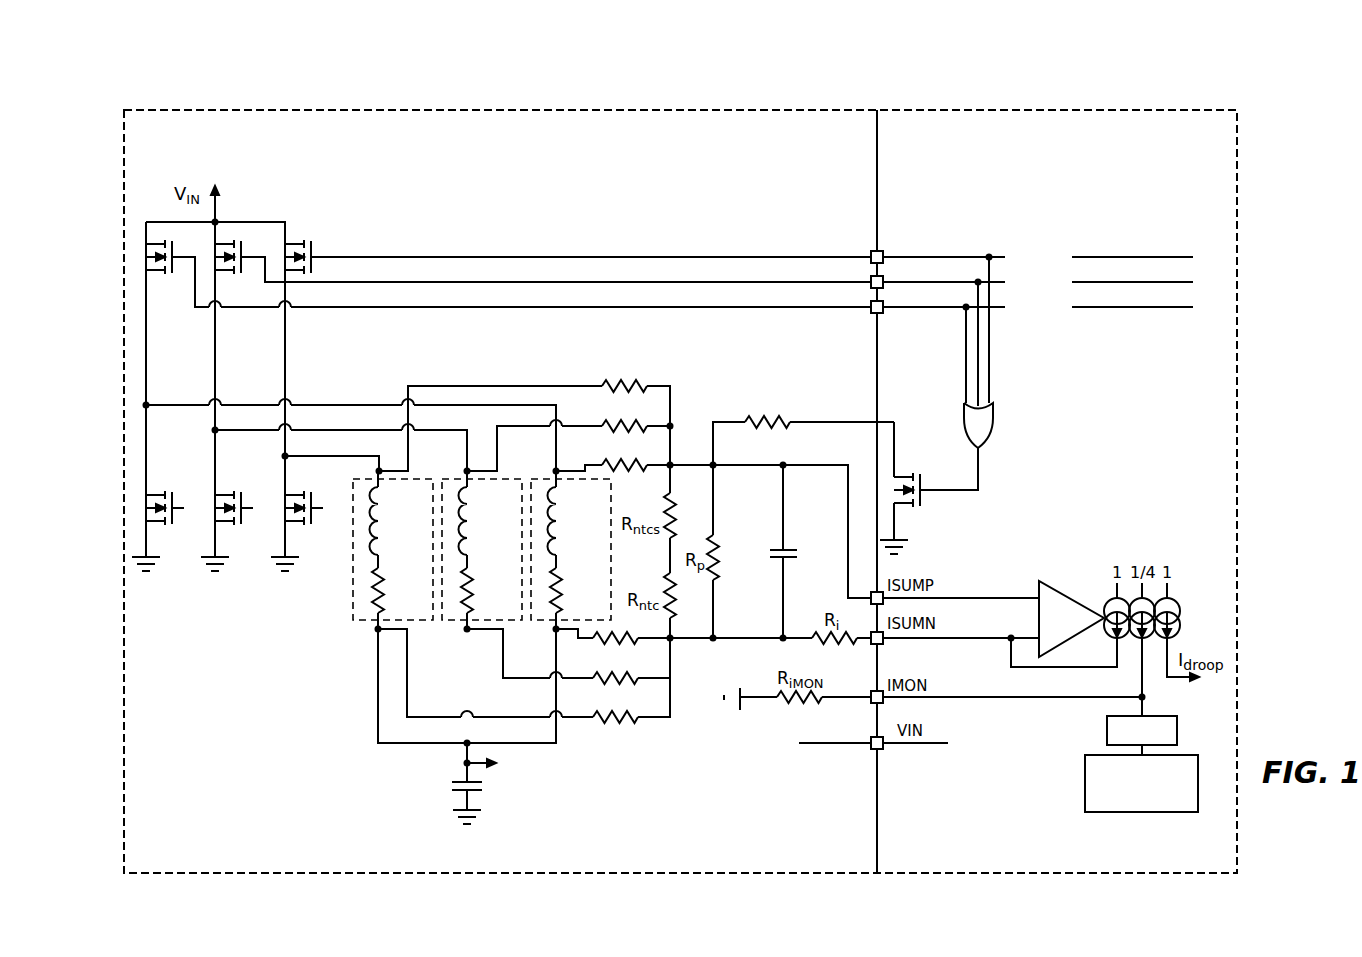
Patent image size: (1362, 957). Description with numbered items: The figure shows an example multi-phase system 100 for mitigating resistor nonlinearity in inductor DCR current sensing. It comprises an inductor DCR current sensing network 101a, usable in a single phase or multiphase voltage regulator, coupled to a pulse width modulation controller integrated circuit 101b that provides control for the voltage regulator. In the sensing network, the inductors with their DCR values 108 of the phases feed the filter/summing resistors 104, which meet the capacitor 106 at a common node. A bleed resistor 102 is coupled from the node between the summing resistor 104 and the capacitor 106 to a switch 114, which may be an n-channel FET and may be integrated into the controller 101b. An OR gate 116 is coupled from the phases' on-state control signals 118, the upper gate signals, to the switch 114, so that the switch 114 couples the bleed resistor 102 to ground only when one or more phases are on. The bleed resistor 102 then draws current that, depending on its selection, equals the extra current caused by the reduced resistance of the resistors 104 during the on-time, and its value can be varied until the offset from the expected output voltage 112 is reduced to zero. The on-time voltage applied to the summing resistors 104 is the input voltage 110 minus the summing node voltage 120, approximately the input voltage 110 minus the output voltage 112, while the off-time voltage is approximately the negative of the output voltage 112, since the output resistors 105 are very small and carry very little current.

The multi-phase system 100 is at (214, 76).
The inductor DCR current sensing network 101a is at (518, 156).
The pulse width modulation controller integrated circuit 101b is at (1075, 156).
The R_BLEED resistor 102 is at (779, 406).
The R_SUM resistor 104 is at (600, 447).
The R_O resistors 105 is at (630, 663).
The capacitor C_n 106 is at (813, 540).
The output inductors with DCR 108 is at (548, 585).
The V_VIN 110 is at (873, 738).
The V_OUT 112 is at (523, 783).
The switch 114 is at (953, 520).
The OR gate 116 is at (1030, 440).
The on-state control signals 118 is at (1102, 257).
The V_ISUMP 120 is at (883, 603).